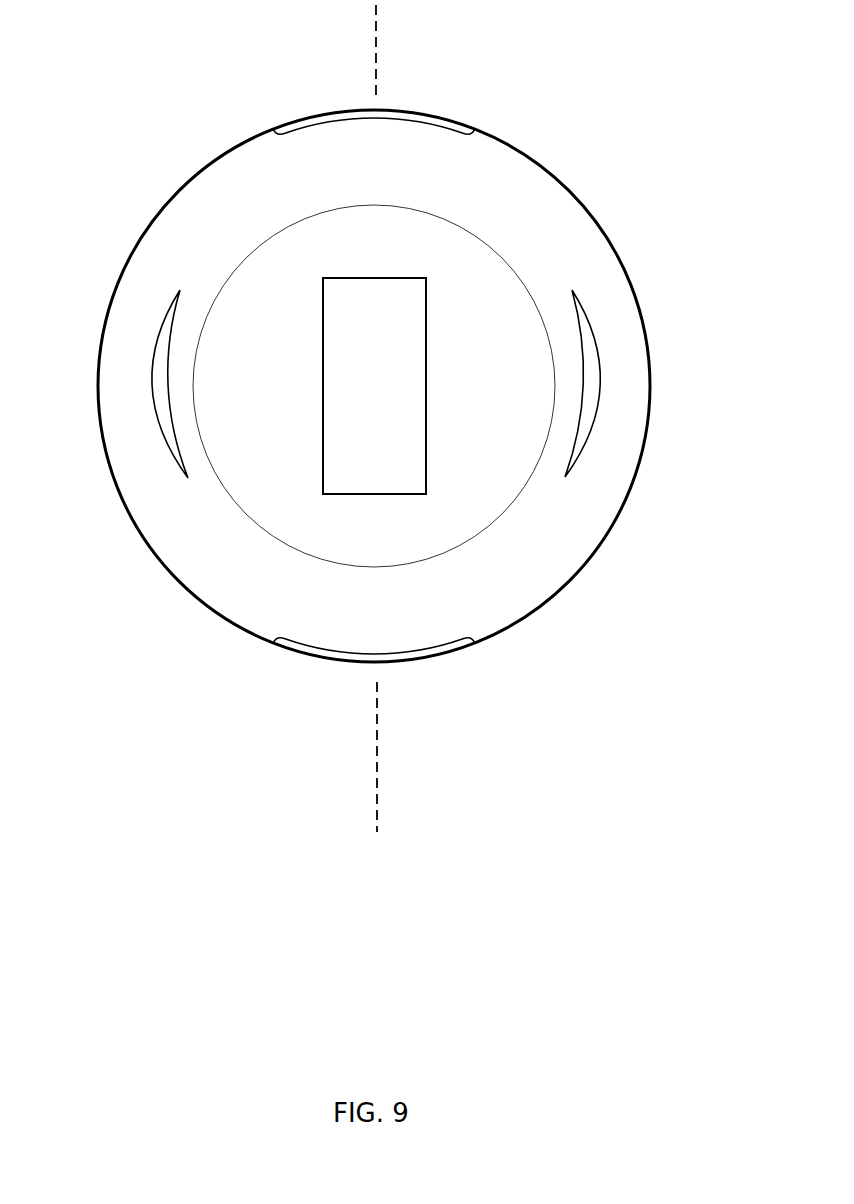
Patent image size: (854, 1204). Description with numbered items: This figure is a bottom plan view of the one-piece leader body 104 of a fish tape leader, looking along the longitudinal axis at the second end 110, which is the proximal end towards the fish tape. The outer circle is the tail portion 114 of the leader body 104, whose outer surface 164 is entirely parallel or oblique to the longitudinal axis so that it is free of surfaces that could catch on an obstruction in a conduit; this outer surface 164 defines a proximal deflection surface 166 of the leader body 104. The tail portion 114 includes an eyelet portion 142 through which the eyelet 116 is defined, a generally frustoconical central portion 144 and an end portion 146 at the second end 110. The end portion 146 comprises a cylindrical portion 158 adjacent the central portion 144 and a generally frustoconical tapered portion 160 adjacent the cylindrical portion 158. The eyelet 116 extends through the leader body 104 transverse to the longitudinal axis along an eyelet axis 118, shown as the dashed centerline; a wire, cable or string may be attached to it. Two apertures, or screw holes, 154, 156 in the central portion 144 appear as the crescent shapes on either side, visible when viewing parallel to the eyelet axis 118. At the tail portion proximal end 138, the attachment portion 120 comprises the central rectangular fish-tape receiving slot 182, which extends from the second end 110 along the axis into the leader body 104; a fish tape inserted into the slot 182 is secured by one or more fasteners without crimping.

The leader body 104 is at (603, 115).
The second end 110 is at (426, 380).
The tail portion 114 is at (572, 538).
The eyelet 116 is at (448, 132).
The eyelet axis 118 is at (377, 787).
The attachment portion 120 is at (506, 576).
The tail portion proximal end 138 is at (435, 386).
The eyelet portion 142 is at (600, 223).
The central portion 144 is at (562, 267).
The end portion 146 is at (273, 495).
The aperture 154 is at (590, 372).
The aperture 156 is at (160, 400).
The cylindrical portion 158 is at (233, 273).
The tapered portion 160 is at (283, 287).
The outer surface 164 is at (563, 487).
The proximal deflection surface 166 is at (255, 580).
The fish-tape receiving slot 182 is at (388, 467).